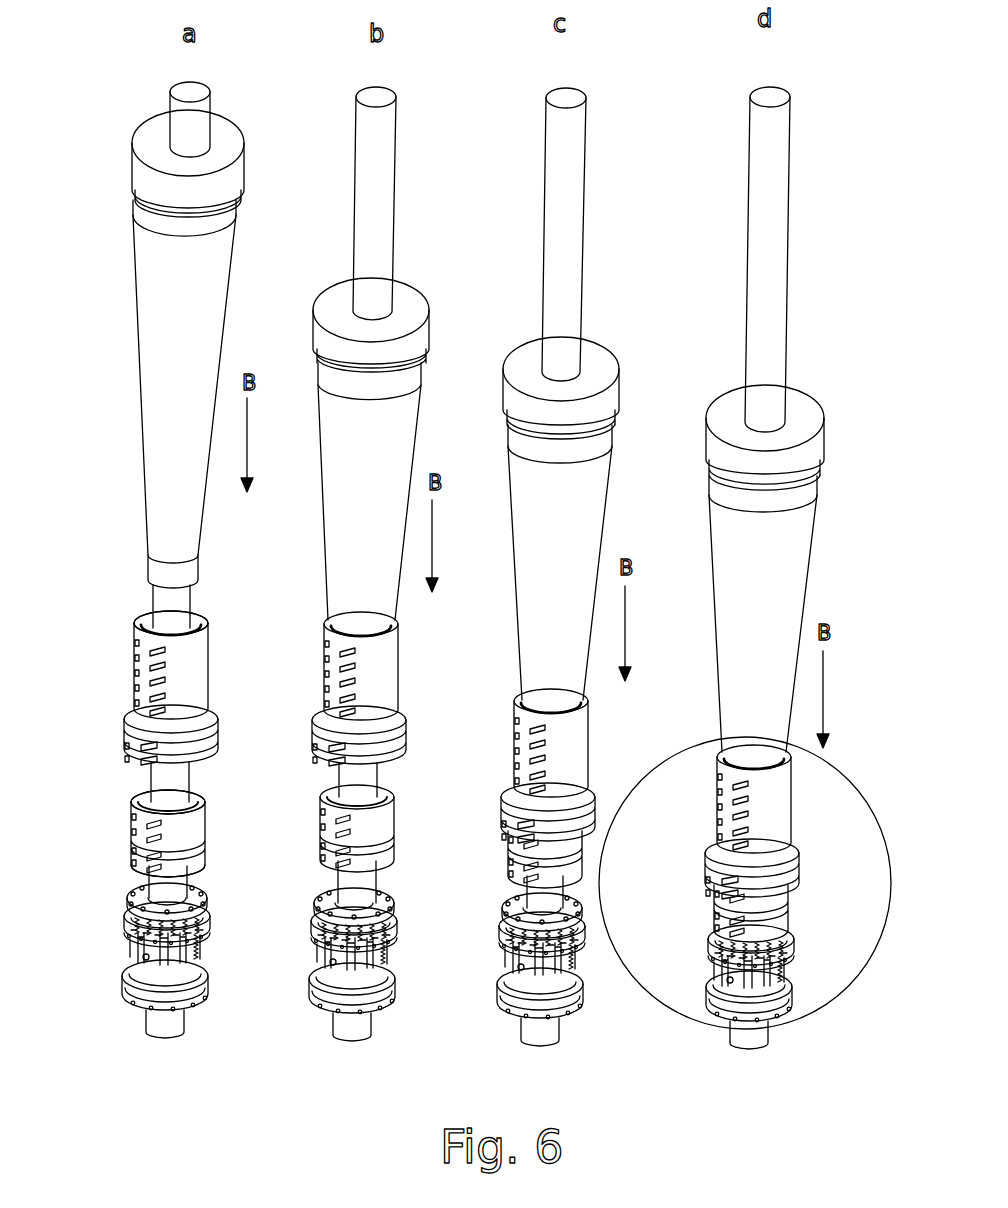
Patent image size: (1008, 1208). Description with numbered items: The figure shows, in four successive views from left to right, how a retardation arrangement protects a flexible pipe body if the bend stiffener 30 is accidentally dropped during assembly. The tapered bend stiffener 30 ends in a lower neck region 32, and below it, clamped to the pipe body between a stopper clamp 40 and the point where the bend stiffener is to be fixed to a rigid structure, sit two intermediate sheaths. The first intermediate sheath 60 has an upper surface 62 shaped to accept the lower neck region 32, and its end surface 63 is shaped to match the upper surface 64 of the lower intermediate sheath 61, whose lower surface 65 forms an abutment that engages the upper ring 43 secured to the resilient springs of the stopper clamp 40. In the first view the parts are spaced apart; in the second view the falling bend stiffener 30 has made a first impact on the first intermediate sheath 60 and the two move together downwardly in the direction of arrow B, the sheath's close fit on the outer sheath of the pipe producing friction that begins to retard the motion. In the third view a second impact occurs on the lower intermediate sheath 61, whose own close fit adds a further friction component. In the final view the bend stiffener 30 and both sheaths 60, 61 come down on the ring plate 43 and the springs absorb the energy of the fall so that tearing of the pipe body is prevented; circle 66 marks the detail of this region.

The bend stiffener 30 is at (208, 294).
The lower neck region 32 is at (160, 578).
The stopper clamp 40 is at (202, 973).
The upper ring 43 is at (197, 888).
The first intermediate sheath 60 is at (200, 663).
The lower intermediate sheath 61 is at (202, 828).
The upper surface 62 is at (205, 607).
The end surface 63 is at (205, 766).
The upper surface 64 is at (202, 798).
The lower surface 65 is at (200, 870).
The circle 66 is at (683, 740).